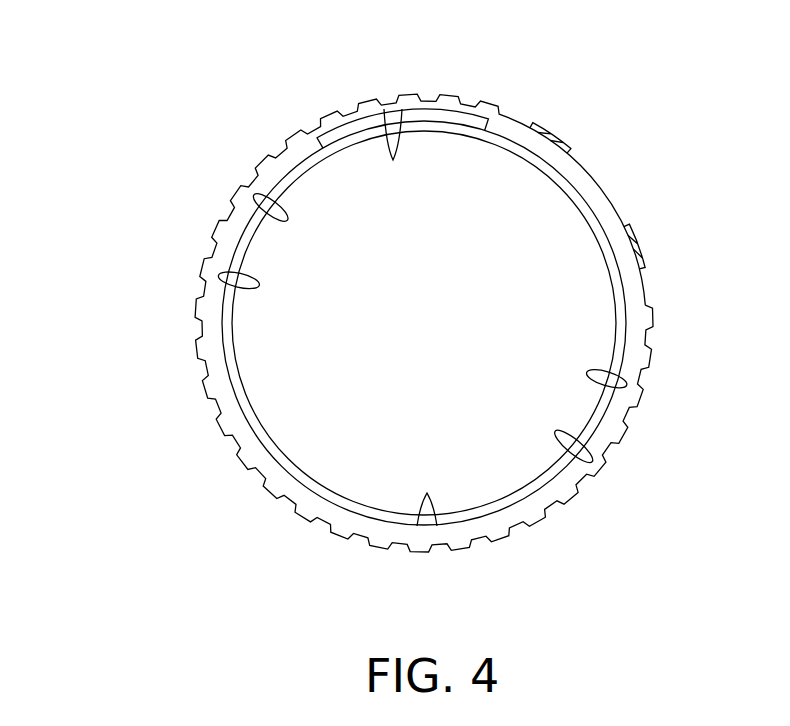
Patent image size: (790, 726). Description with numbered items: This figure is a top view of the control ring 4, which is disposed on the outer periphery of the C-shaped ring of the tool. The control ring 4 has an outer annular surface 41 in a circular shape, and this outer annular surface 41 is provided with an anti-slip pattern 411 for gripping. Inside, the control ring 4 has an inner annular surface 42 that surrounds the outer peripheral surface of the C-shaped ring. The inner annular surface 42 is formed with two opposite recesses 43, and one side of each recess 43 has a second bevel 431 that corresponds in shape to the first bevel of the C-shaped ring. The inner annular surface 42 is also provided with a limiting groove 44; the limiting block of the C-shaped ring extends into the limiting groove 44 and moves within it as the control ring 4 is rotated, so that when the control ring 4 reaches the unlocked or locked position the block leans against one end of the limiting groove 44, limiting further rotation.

The control ring 4 is at (53, 139).
The outer annular surface 41 is at (391, 341).
The anti-slip pattern 411 is at (215, 432).
The inner annular surface 42 is at (428, 497).
The recess 43 is at (280, 220).
The second bevel 431 is at (255, 278).
The limiting groove 44 is at (395, 160).